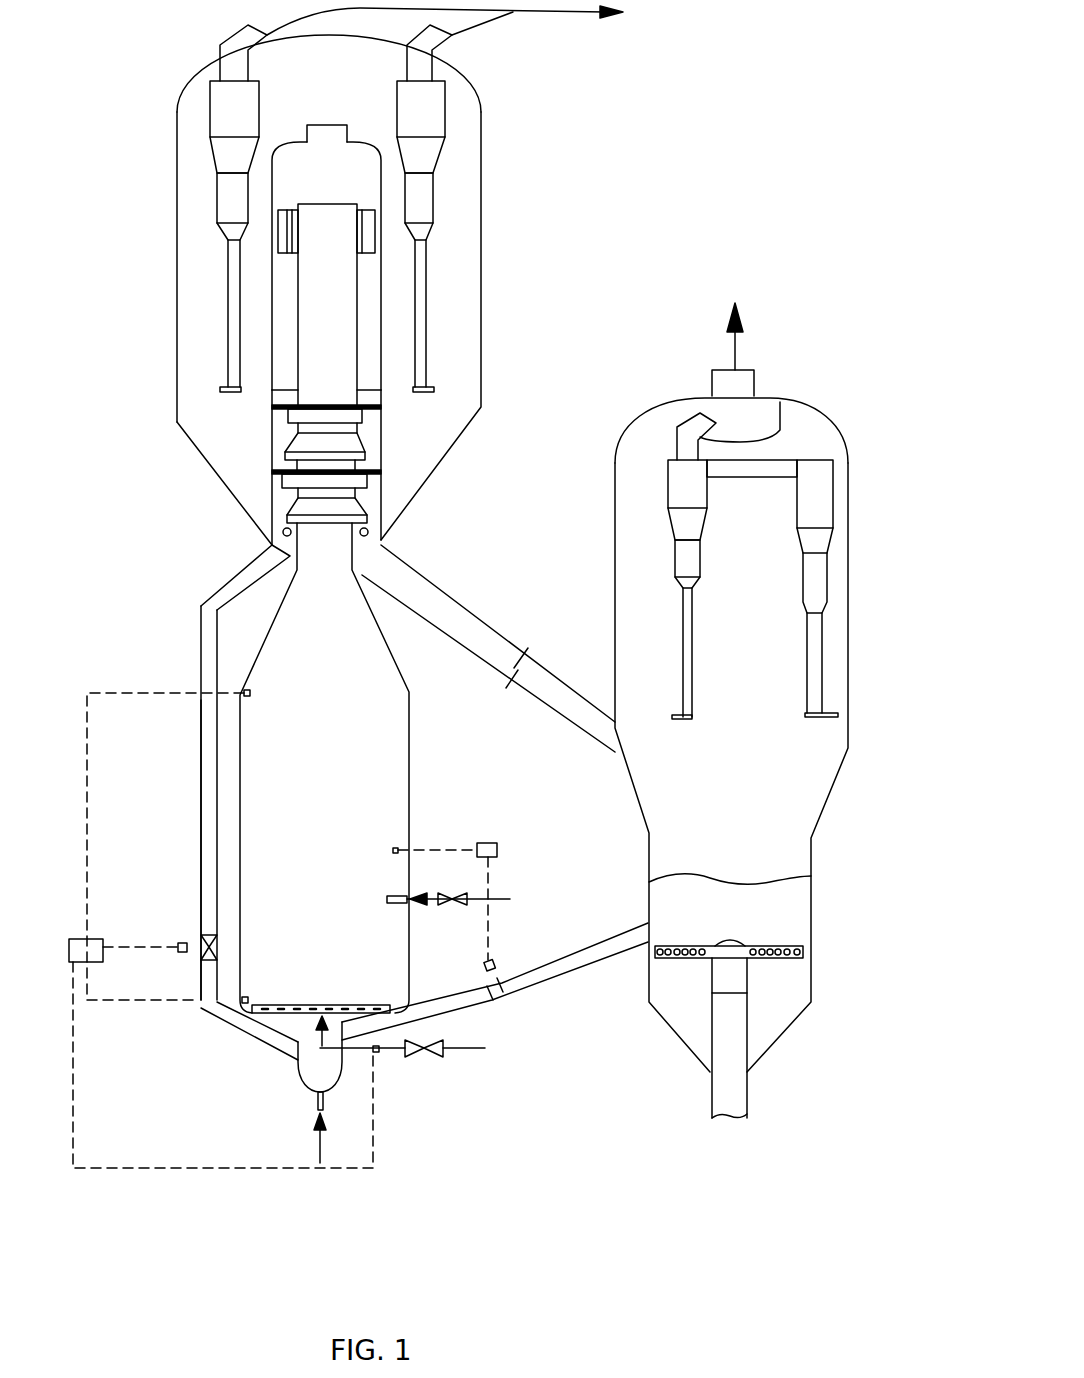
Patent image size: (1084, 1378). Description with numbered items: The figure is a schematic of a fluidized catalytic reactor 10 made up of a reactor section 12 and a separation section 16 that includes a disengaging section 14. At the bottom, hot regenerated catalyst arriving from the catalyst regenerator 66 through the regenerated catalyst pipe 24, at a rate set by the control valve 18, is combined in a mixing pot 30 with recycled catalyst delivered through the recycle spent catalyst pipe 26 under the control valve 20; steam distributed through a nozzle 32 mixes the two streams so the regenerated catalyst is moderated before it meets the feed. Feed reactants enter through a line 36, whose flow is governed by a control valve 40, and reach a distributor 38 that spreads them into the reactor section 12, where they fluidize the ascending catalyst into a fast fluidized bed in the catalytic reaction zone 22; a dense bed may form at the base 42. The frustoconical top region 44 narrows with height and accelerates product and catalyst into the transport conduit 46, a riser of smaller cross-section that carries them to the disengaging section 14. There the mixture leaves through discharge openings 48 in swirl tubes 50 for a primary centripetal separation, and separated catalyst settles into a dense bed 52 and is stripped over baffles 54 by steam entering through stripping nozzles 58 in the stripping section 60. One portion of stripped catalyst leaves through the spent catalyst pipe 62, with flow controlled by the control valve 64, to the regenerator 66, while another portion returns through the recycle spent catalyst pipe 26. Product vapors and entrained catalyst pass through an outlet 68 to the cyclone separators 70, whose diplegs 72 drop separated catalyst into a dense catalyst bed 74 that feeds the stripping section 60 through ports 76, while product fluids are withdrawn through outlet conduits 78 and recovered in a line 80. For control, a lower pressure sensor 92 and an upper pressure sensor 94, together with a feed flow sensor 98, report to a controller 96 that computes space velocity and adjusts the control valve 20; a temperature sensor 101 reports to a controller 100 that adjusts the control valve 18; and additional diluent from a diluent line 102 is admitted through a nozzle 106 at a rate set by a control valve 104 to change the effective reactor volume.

The catalytic reactor 10 is at (165, 568).
The reactor section 12 is at (387, 785).
The disengaging section 14 is at (367, 333).
The separation section 16 is at (465, 182).
The control valve 18 is at (495, 985).
The control valve 20 is at (207, 947).
The catalytic reaction zone 22 is at (293, 830).
The regenerated catalyst pipe 24 is at (598, 943).
The recycle spent catalyst pipe 26 is at (203, 793).
The mixing pot 30 is at (313, 1070).
The nozzle 32 is at (317, 1102).
The line 36 is at (392, 1053).
The distributor 38 is at (372, 1005).
The control valve 40 is at (424, 1058).
The base 42 is at (273, 1022).
The top region 44 is at (293, 647).
The transport conduit 46 is at (325, 323).
The discharge openings 48 is at (368, 233).
The swirl tubes 50 is at (292, 250).
The dense bed 52 is at (337, 412).
The baffles 54 is at (342, 440).
The stripping nozzles 58 is at (283, 532).
The stripping section 60 is at (375, 495).
The spent catalyst pipe 62 is at (460, 606).
The control valve 64 is at (520, 665).
The catalyst regenerator 66 is at (866, 785).
The outlet 68 is at (322, 125).
The cyclone separator 70 is at (223, 115).
The dipleg 72 is at (232, 372).
The dense catalyst bed 74 is at (270, 405).
The ports 76 is at (270, 430).
The outlet conduits 78 is at (220, 45).
The line 80 is at (558, 13).
The pressure sensor 92 is at (242, 1003).
The pressure sensor 94 is at (245, 688).
The controller 96 is at (110, 939).
The sensor 98 is at (373, 1052).
The controller 100 is at (491, 843).
The temperature sensor 101 is at (397, 847).
The diluent line 102 is at (497, 898).
The control valve 104 is at (452, 897).
The nozzle 106 is at (393, 907).